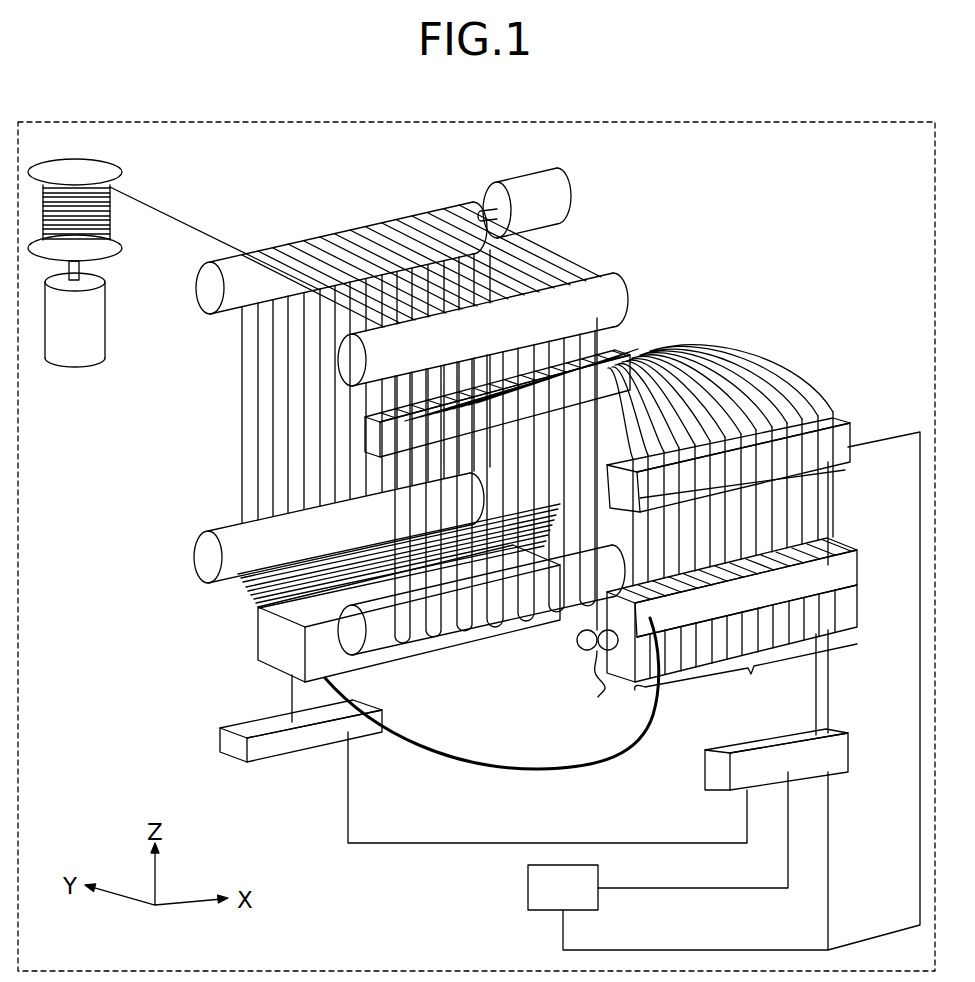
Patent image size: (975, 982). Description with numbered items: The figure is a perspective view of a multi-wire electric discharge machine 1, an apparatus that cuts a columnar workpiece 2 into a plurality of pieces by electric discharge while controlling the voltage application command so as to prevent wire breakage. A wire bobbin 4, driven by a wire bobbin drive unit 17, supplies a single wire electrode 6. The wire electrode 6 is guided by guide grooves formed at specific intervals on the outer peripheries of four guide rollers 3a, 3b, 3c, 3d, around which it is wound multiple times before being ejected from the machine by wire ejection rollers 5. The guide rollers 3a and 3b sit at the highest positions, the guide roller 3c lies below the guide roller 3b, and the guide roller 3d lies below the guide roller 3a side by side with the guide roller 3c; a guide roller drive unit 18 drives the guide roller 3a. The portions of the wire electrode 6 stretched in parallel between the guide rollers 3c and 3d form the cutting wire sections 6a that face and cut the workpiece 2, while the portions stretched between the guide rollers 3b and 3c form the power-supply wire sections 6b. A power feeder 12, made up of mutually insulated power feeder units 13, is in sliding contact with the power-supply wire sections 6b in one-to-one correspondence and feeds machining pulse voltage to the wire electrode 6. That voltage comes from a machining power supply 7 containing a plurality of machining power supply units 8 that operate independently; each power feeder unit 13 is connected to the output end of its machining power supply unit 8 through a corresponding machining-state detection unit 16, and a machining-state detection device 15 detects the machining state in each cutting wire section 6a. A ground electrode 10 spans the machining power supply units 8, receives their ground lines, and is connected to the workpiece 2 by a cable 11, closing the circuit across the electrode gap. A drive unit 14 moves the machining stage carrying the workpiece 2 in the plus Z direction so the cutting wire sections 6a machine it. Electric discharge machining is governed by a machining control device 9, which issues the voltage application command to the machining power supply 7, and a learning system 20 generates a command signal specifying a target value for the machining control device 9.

The multi-wire electric discharge machine 1 is at (860, 122).
The workpiece 2 is at (278, 642).
The guide roller 3a is at (230, 268).
The guide roller 3b is at (607, 283).
The guide roller 3c is at (357, 641).
The guide roller 3d is at (200, 560).
The wire bobbin 4 is at (112, 176).
The wire ejection rollers 5 is at (578, 645).
The wire electrode 6 is at (157, 207).
The cutting wire section 6a is at (245, 580).
The power-supply wire section 6b is at (502, 523).
The machining power supply 7 is at (746, 678).
The machining power supply unit 8 is at (850, 612).
The machining control device 9 is at (848, 755).
The ground electrode 10 is at (852, 566).
The cable 11 is at (488, 760).
The power feeder 12 is at (655, 348).
The power feeder unit 13 is at (600, 353).
The drive unit 14 is at (307, 738).
The machining-state detection device 15 is at (838, 476).
The machining-state detection unit 16 is at (845, 425).
The wire bobbin drive unit 17 is at (78, 357).
The guide roller drive unit 18 is at (550, 196).
The learning system 20 is at (528, 893).